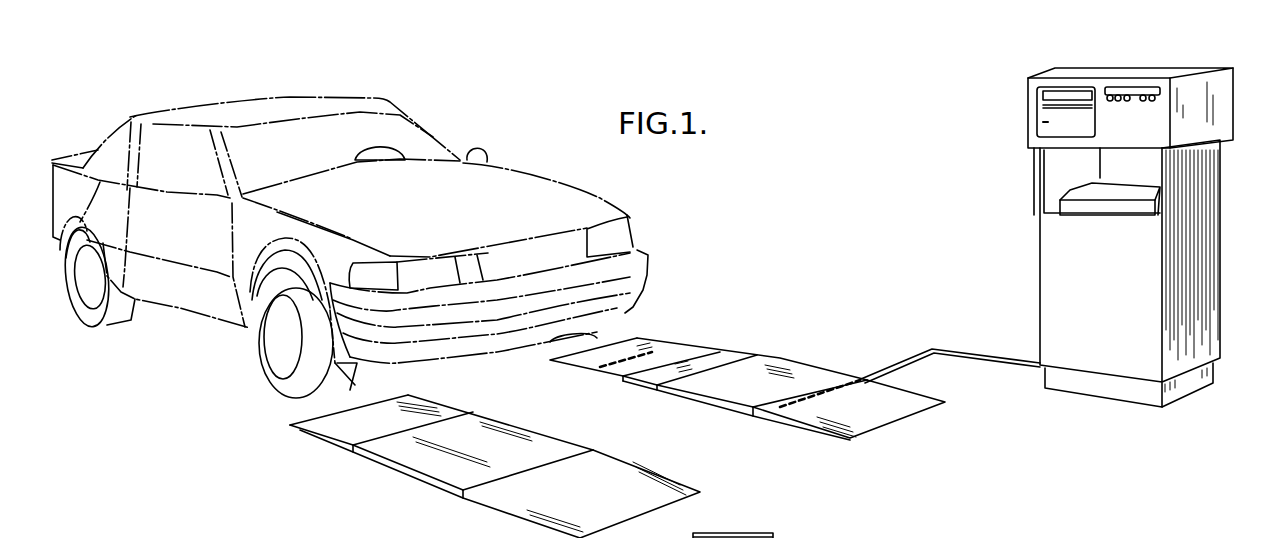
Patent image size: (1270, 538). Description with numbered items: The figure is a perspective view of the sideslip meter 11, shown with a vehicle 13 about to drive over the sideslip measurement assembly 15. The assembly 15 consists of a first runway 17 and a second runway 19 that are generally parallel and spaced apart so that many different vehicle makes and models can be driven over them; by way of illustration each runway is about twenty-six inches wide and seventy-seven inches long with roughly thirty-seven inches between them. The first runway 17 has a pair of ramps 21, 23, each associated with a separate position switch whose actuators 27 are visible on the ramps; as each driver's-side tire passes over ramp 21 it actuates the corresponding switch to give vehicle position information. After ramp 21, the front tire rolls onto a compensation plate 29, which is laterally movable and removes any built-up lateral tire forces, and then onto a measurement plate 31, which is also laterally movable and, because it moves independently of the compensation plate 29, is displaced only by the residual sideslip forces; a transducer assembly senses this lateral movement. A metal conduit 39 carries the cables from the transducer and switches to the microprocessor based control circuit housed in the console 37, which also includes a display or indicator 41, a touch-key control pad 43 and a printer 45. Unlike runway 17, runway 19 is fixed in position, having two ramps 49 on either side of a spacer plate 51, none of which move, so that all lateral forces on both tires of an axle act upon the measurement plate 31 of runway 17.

The sideslip meter 11 is at (953, 218).
The vehicle 13 is at (550, 178).
The sideslip measurement assembly 15 is at (670, 472).
The first runway 17 is at (792, 367).
The second runway 19 is at (398, 477).
The ramp 21 is at (650, 337).
The ramp 23 is at (815, 430).
The switch actuators 27 is at (665, 350).
The compensation plate 29 is at (707, 360).
The measurement plate 31 is at (756, 387).
The console 37 is at (1038, 252).
The metal conduit 39 is at (917, 366).
The display or indicator 41 is at (1040, 125).
The touch-key control pad 43 is at (1127, 87).
The printer 45 is at (1112, 195).
The ramps 49 is at (310, 437).
The spacer plate 51 is at (540, 412).